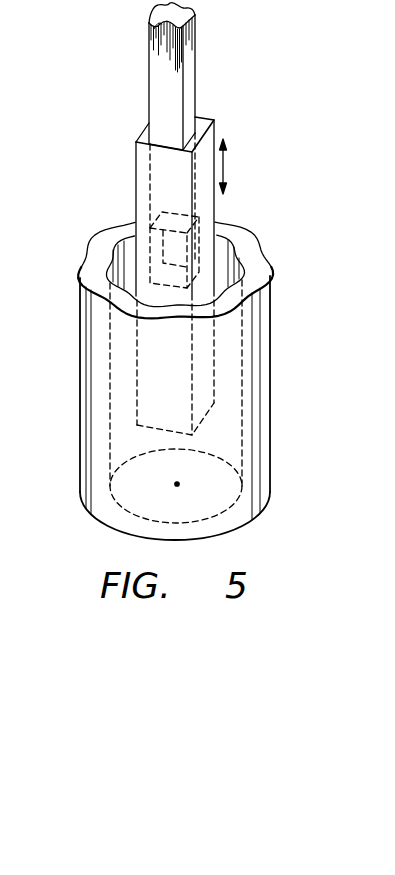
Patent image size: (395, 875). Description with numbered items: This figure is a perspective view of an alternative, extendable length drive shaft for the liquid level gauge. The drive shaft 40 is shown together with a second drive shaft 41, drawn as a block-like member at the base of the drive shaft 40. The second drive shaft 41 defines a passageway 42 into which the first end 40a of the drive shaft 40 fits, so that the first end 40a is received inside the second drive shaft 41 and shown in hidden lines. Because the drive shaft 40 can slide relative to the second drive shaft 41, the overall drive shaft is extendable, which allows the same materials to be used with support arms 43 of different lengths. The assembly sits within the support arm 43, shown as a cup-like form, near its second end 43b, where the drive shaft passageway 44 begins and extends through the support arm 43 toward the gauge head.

The drive shaft 40 is at (149, 80).
The first end of drive shaft 40a is at (148, 238).
The second drive shaft 41 is at (136, 174).
The passageway 42 is at (108, 255).
The support arm 43 is at (270, 330).
The second end of support arm 43b is at (271, 488).
The drive shaft passageway 44 is at (177, 482).